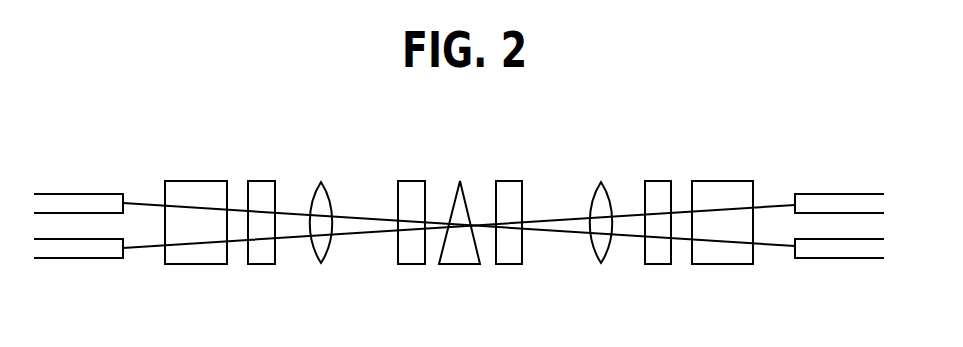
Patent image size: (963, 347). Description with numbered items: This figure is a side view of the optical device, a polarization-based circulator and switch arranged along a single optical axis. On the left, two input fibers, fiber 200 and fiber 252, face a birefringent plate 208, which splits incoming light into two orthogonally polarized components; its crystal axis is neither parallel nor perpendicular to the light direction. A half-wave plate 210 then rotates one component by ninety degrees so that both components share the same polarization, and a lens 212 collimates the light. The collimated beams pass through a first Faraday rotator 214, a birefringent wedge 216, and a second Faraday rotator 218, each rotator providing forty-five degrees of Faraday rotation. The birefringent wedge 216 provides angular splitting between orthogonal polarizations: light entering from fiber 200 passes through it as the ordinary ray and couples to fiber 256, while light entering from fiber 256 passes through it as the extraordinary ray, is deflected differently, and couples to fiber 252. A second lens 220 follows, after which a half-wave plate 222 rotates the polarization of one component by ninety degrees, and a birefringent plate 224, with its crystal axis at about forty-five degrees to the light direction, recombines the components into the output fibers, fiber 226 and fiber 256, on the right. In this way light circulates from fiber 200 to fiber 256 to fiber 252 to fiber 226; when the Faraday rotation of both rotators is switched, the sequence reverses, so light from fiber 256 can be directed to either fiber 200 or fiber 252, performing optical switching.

The fiber 200 is at (77, 193).
The fiber 252 is at (82, 259).
The birefringent plate 208 is at (197, 181).
The half-wave plate 210 is at (267, 181).
The lens 212 is at (318, 182).
The first Faraday rotator 214 is at (416, 265).
The birefringent wedge 216 is at (454, 265).
The second Faraday rotator 218 is at (513, 265).
The lens 220 is at (601, 182).
The half-wave plate 222 is at (660, 265).
The birefringent plate 224 is at (745, 181).
The fiber 226 is at (841, 194).
The fiber 256 is at (854, 258).